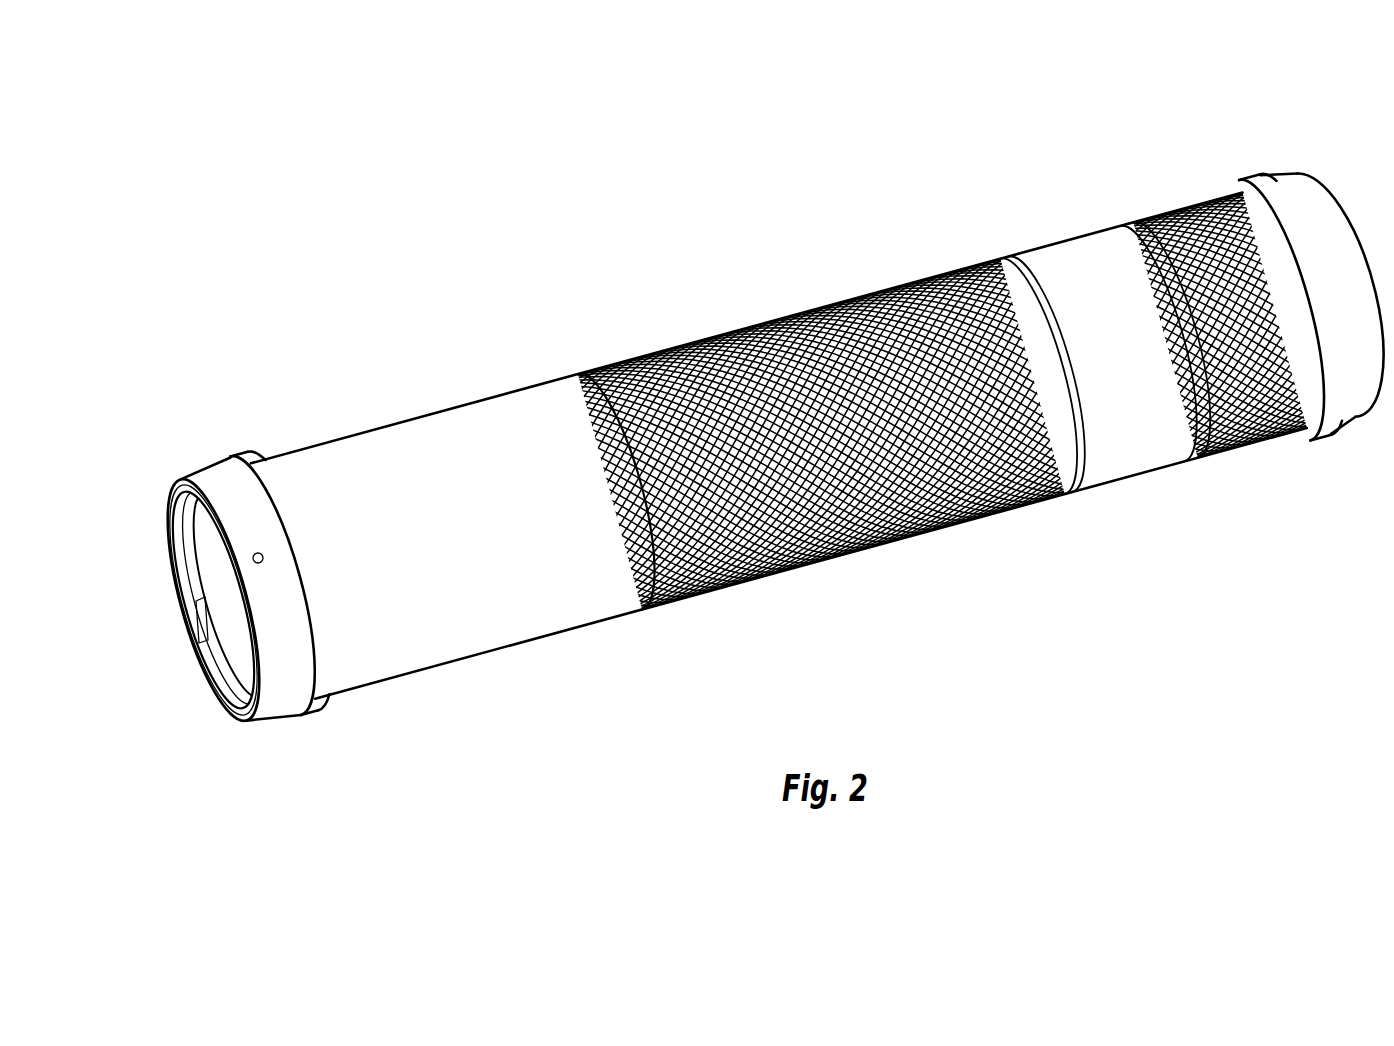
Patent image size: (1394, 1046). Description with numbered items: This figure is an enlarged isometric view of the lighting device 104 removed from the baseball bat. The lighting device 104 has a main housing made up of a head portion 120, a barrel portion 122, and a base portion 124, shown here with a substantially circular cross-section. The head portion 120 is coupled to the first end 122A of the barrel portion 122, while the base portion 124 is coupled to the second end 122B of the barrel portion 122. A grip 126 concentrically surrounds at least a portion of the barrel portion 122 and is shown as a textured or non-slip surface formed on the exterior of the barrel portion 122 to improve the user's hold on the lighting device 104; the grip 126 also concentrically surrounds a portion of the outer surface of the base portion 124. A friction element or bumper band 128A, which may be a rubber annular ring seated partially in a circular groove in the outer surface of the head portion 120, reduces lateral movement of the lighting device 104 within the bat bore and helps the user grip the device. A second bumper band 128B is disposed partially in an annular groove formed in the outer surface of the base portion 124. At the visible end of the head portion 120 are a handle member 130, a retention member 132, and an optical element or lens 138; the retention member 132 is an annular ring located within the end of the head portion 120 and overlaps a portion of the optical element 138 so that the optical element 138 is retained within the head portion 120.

The lighting device 104 is at (700, 130).
The head portion 120 is at (652, 667).
The barrel portion 122 is at (661, 666).
The first end of the barrel portion 122A is at (597, 372).
The second end of the barrel portion 122B is at (1001, 257).
The base portion 124 is at (1393, 480).
The grip 126 is at (1133, 257).
The bumper band 128A is at (240, 460).
The second bumper band 128B is at (1250, 185).
The handle member 130 is at (187, 553).
The retention member 132 is at (234, 695).
The optical element or lens 138 is at (233, 588).